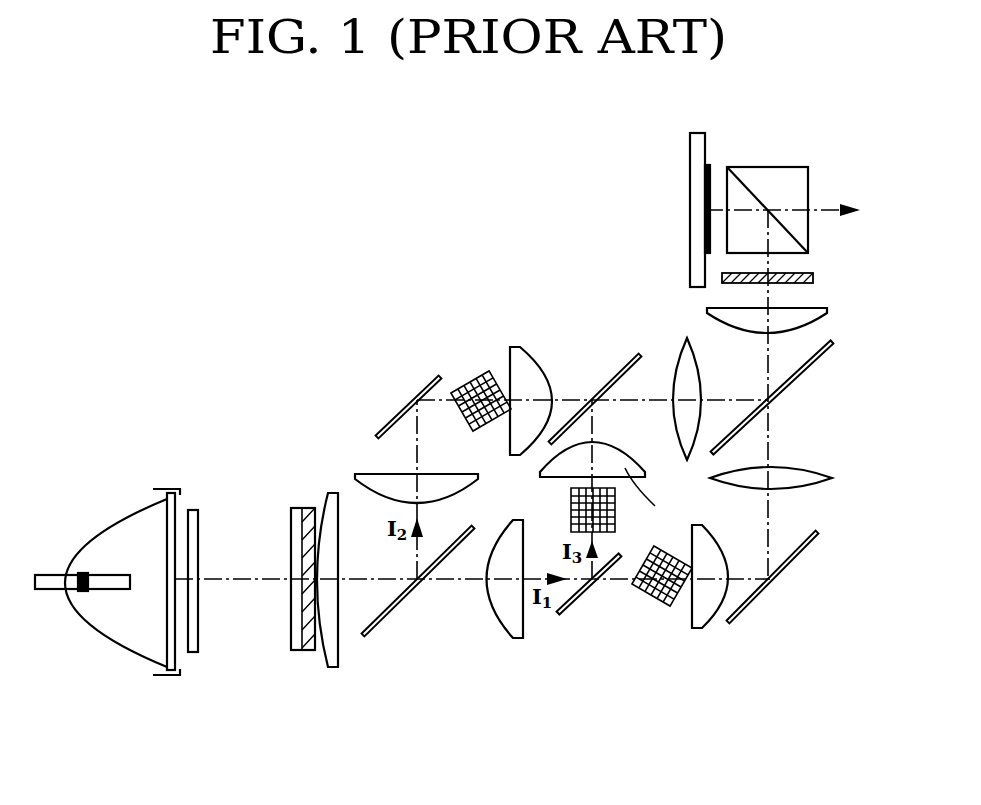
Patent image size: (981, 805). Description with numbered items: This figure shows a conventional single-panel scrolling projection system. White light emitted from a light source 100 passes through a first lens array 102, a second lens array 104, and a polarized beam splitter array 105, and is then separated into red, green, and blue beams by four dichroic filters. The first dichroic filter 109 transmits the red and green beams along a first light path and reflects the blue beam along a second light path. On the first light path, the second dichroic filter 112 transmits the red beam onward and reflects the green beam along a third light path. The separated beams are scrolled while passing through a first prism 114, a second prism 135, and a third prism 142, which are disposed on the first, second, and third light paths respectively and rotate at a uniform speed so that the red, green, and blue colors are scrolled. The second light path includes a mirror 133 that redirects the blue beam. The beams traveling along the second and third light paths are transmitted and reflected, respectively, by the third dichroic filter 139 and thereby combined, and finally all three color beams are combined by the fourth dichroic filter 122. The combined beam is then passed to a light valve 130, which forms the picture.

The light source 100 is at (117, 533).
The first lens array 102 is at (193, 535).
The second lens array 104 is at (297, 647).
The polarized beam splitter array 105 is at (308, 647).
The first dichroic filter 109 is at (400, 607).
The second dichroic filter 112 is at (583, 597).
The first prism 114 is at (665, 603).
The fourth dichroic filter 122 is at (792, 383).
The light valve 130 is at (692, 210).
The mirror 133 is at (403, 414).
The second prism 135 is at (480, 373).
The third dichroic filter 139 is at (608, 383).
The third prism 142 is at (571, 505).